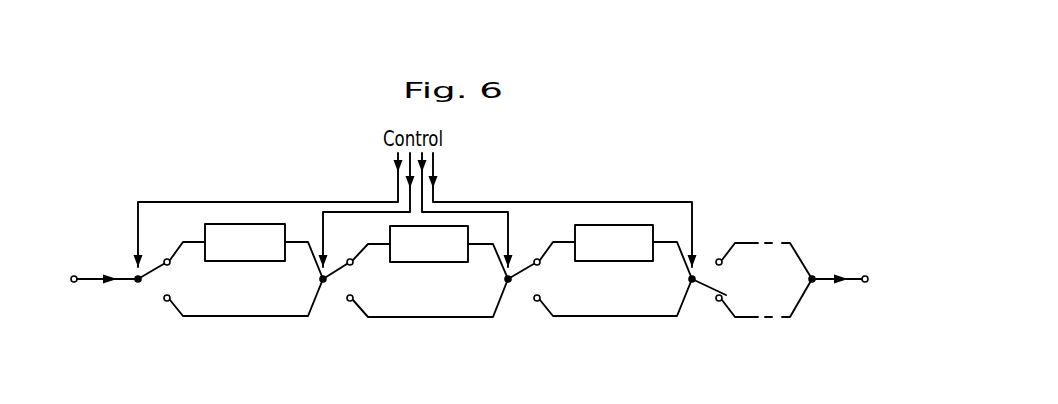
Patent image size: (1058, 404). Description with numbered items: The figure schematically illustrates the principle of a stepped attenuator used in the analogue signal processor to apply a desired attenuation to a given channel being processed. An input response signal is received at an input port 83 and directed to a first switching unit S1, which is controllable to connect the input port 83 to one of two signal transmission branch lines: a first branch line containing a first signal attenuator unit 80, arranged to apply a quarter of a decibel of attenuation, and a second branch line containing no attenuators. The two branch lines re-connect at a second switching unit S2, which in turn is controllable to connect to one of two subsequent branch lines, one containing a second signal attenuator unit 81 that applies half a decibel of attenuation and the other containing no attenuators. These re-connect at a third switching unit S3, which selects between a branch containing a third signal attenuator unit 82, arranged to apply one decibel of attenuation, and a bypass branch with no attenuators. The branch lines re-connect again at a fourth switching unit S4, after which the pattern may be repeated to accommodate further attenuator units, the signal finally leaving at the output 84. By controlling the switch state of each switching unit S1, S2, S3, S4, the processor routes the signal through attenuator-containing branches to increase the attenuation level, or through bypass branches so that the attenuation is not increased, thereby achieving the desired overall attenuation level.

The first signal attenuator unit 80 is at (222, 262).
The second signal attenuator unit 81 is at (402, 262).
The third signal attenuator unit 82 is at (593, 261).
The input port 83 is at (74, 283).
The output terminal 84 is at (864, 283).
The first switching unit S1 is at (152, 283).
The second switching unit S2 is at (338, 281).
The third switching unit S3 is at (522, 281).
The fourth switching unit S4 is at (703, 287).